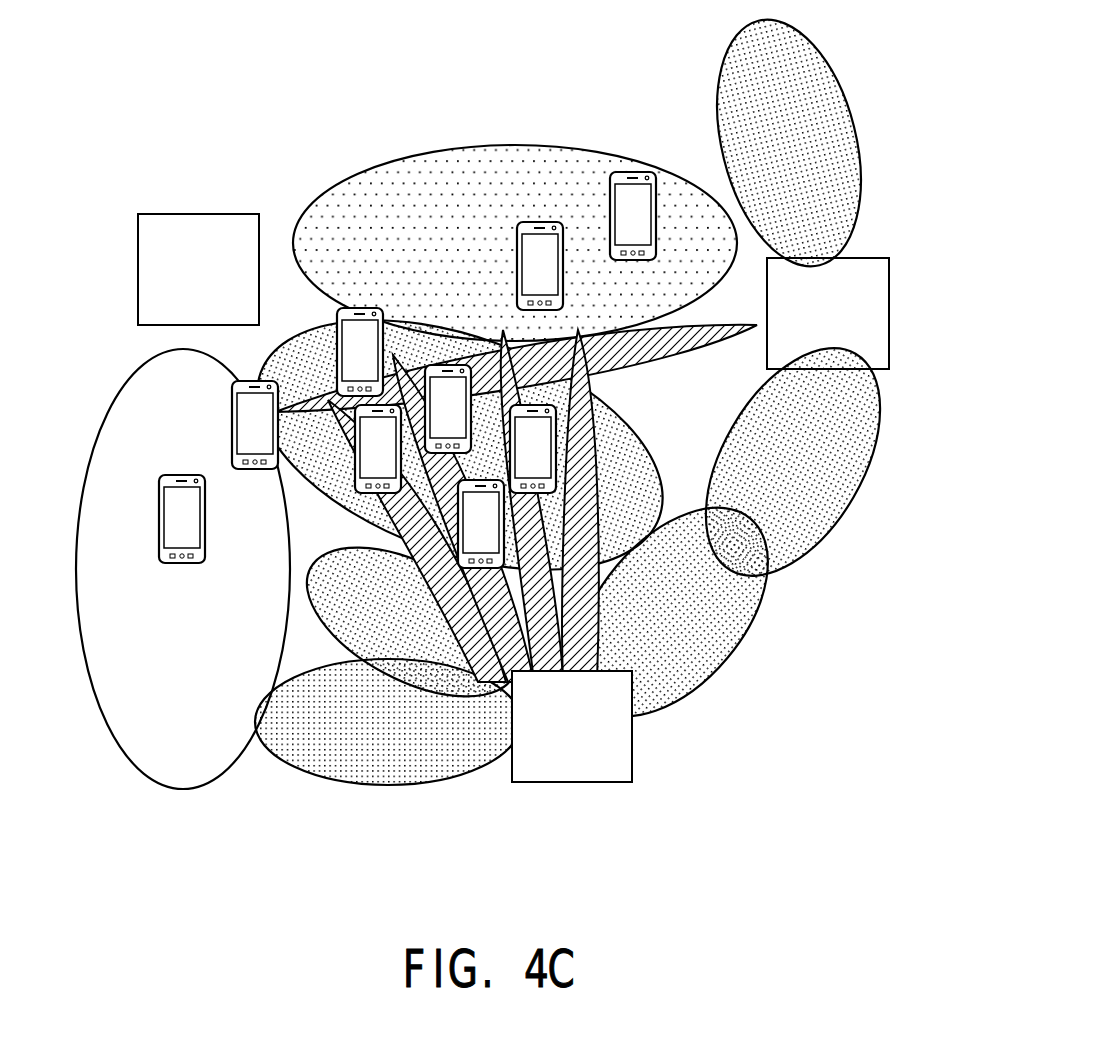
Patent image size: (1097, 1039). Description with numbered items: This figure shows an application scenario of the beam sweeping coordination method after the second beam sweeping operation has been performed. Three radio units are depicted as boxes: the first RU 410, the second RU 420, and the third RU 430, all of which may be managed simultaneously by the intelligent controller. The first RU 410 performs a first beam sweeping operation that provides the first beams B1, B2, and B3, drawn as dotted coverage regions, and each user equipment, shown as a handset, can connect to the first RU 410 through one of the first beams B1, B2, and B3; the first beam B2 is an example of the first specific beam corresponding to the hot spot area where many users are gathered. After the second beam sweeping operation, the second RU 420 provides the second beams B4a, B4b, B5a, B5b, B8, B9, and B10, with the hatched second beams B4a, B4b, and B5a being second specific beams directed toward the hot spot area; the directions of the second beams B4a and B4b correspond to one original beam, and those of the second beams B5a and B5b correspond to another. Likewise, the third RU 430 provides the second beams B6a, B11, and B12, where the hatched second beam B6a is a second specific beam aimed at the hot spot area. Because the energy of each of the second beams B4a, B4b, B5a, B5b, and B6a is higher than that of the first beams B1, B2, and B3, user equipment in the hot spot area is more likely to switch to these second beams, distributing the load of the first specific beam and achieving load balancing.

The first RU 410 is at (218, 285).
The second RU 420 is at (592, 741).
The third RU 430 is at (848, 326).
The first beam B1 is at (183, 569).
The first beam B2 is at (460, 445).
The first beam B3 is at (515, 243).
The second beam B4a is at (477, 635).
The second beam B4b is at (510, 637).
The second beam B5a is at (550, 637).
The second beam B5b is at (585, 607).
The second beam B6a is at (685, 345).
The second beam B8 is at (352, 752).
The second beam B9 is at (662, 697).
The second beam B10 is at (343, 636).
The second beam B11 is at (820, 88).
The second beam B12 is at (828, 497).